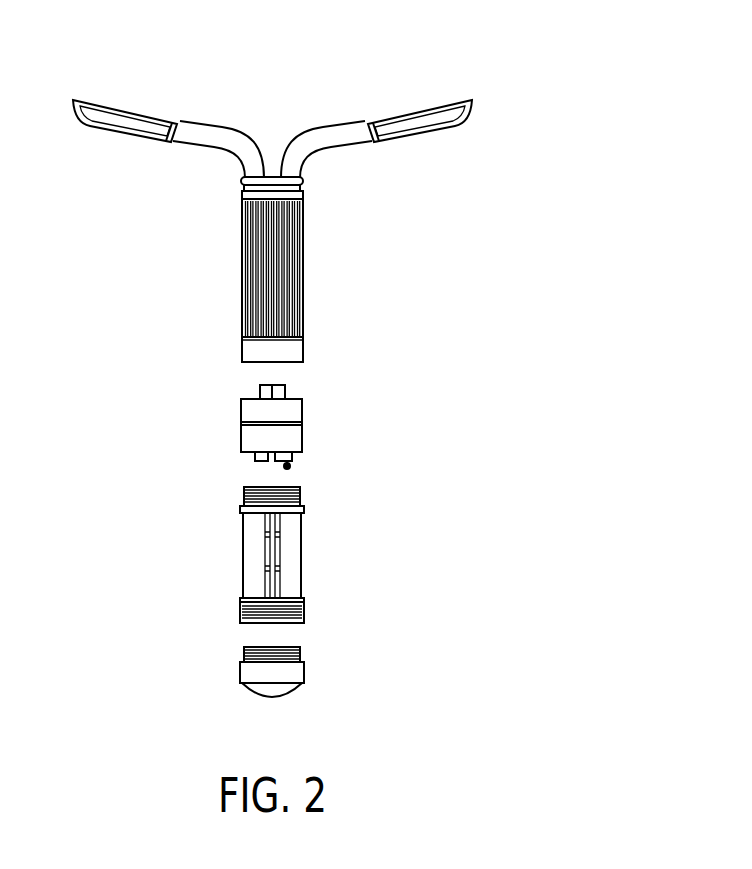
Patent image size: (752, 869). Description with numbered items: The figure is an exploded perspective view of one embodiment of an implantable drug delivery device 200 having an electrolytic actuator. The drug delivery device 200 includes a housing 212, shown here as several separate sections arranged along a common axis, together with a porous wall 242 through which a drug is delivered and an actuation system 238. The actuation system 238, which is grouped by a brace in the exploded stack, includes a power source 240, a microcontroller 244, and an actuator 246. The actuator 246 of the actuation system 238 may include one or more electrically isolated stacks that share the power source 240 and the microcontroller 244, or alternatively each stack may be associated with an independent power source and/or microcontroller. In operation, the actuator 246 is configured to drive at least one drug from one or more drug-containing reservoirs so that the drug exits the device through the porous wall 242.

The drug delivery device 200 is at (272, 358).
The housing 212 is at (290, 352).
The actuation system 238 is at (281, 541).
The power source 240 is at (293, 677).
The porous wall 242 is at (283, 270).
The microcontroller 244 is at (272, 552).
The actuator 246 is at (367, 377).